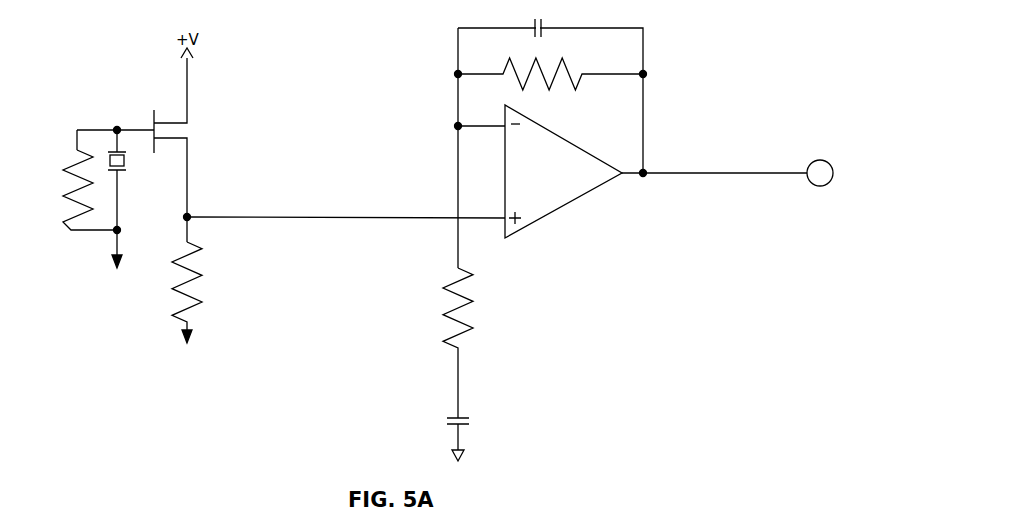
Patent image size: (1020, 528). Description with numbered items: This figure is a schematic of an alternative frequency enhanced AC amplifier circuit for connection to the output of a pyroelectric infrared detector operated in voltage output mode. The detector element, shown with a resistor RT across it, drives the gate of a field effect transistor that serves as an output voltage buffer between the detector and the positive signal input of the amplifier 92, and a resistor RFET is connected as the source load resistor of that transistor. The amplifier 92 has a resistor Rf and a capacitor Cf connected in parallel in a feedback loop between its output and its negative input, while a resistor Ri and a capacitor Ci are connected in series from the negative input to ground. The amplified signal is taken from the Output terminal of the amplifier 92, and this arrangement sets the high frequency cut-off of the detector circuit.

The amplifier 92 is at (590, 153).
The resistor RT is at (78, 180).
The FET source load resistor RFET is at (203, 292).
The feedback capacitor Cf is at (538, 18).
The feedback resistor Rf is at (551, 88).
The input resistor Ri is at (469, 343).
The input capacitor Ci is at (467, 438).
The output Output is at (746, 188).